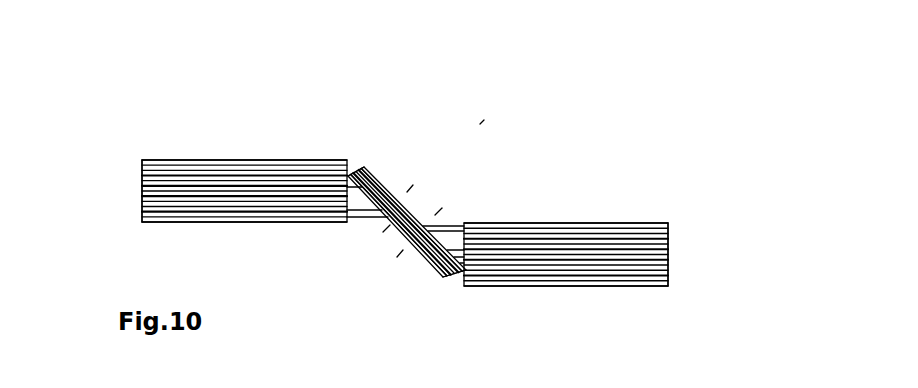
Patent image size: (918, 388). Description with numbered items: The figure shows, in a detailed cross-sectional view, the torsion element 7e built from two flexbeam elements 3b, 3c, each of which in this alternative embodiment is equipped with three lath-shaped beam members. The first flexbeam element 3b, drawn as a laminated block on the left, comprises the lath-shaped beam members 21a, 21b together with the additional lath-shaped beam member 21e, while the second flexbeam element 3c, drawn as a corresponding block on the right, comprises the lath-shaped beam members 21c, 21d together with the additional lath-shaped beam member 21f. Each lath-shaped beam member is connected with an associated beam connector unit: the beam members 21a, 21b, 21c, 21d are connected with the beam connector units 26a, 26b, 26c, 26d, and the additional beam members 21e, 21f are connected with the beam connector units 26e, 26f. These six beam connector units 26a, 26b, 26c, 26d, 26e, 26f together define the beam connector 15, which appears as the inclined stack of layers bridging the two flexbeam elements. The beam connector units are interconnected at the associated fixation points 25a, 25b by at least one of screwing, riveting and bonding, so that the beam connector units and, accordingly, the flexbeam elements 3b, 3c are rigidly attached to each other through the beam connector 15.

The flexbeam element 3b is at (231, 150).
The flexbeam element 3c is at (591, 192).
The torsion element 7e is at (488, 112).
The beam connector 15 is at (400, 166).
The lath-shaped beam member 21a is at (156, 160).
The lath-shaped beam member 21b is at (142, 187).
The lath-shaped beam member 21c is at (654, 223).
The lath-shaped beam member 21d is at (668, 248).
The additional lath-shaped beam member 21e is at (152, 222).
The additional lath-shaped beam member 21f is at (652, 287).
The fixation point 25a is at (423, 199).
The fixation point 25b is at (440, 220).
The beam connector unit 26a is at (362, 167).
The beam connector unit 26b is at (355, 210).
The beam connector unit 26c is at (464, 223).
The beam connector unit 26d is at (430, 253).
The beam connector unit 26e is at (368, 217).
The beam connector unit 26f is at (452, 276).